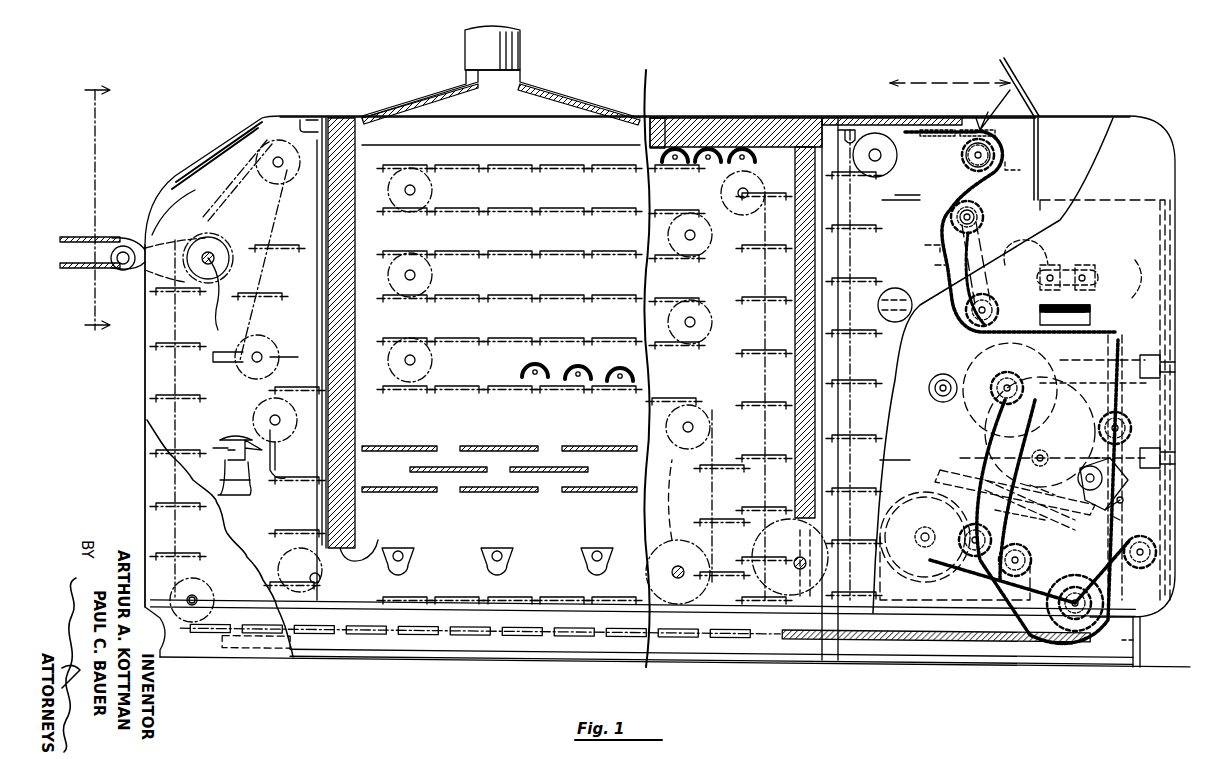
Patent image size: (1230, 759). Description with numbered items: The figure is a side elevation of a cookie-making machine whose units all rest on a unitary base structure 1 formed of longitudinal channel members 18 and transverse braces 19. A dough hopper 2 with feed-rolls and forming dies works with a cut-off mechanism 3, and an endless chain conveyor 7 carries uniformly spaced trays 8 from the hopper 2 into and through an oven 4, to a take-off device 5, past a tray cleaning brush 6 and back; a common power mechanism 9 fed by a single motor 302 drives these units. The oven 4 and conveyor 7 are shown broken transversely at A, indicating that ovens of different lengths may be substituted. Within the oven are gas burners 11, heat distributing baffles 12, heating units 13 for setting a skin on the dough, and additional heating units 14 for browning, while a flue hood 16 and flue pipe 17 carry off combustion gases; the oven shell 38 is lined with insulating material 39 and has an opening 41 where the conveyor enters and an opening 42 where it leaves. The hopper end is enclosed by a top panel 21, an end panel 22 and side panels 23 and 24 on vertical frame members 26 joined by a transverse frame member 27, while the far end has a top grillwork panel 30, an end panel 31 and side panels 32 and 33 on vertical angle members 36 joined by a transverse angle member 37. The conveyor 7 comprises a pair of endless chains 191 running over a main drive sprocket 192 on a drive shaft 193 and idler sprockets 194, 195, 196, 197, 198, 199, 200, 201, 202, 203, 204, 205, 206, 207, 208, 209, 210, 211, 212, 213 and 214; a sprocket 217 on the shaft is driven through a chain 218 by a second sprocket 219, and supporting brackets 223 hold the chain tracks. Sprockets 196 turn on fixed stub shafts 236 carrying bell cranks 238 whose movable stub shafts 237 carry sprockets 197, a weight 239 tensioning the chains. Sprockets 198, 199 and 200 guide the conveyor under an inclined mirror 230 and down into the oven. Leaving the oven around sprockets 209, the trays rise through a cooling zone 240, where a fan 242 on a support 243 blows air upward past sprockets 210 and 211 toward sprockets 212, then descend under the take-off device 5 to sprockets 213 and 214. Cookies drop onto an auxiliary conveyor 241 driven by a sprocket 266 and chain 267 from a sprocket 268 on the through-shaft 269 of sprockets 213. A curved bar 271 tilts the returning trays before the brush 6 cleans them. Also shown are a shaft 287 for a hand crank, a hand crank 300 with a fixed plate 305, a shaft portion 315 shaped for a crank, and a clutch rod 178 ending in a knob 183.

The base structure 1 is at (980, 672).
The dough hopper 2 is at (1056, 198).
The cut-off mechanism 3 is at (1045, 338).
The oven 4 is at (718, 117).
The take-off device 5 is at (178, 202).
The tray cleaning brush 6 is at (1162, 563).
The endless chain conveyor 7 is at (745, 655).
The trays 8 is at (760, 617).
The common power mechanism 9 is at (1070, 512).
The gas burners 11 is at (597, 548).
The heat distributing baffles 12 is at (410, 472).
The heating units 13 is at (710, 166).
The additional heating units 14 is at (602, 372).
The flue hood 16 is at (576, 100).
The flue pipe 17 is at (465, 47).
The channel members 18 is at (517, 660).
The transverse braces 19 is at (1165, 632).
The top panel 21 is at (915, 118).
The end panel 22 is at (1172, 548).
The side panel 23 is at (901, 190).
The side panel 24 is at (895, 452).
The vertical frame members 26 is at (855, 248).
The transverse frame member 27 is at (848, 128).
The top grillwork panel 30 is at (205, 162).
The end panel 31 is at (145, 460).
The side panel 32 is at (150, 512).
The side panel 33 is at (200, 420).
The vertical angle members 36 is at (317, 295).
The transverse angle member 37 is at (312, 118).
The oven shell 38 is at (666, 118).
The insulating material 39 is at (778, 118).
The opening 41 is at (790, 520).
The opening 42 is at (367, 534).
The rod 178 is at (950, 405).
The knob or handle 183 is at (932, 395).
The endless chains 191 is at (838, 640).
The main drive sprocket 192 is at (1046, 543).
The drive shaft 193 is at (1075, 603).
The idler sprockets 194 is at (1150, 440).
The idler sprockets 195 is at (1122, 330).
The idler sprockets 196 is at (960, 338).
The idler sprockets 197 is at (950, 218).
The idler sprockets 198 is at (962, 168).
The idler sprockets 199 is at (897, 165).
The idler sprockets 200 is at (765, 540).
The idler sprockets 201 is at (752, 188).
The idler sprockets 202 is at (435, 190).
The idler sprockets 203 is at (705, 250).
The idler sprockets 204 is at (435, 275).
The idler sprockets 205 is at (712, 322).
The idler sprockets 206 is at (435, 362).
The idler sprockets 207 is at (688, 449).
The idler sprockets 208 is at (674, 500).
The sprockets 209 is at (290, 575).
The idler sprockets 210 is at (272, 454).
The idler sprockets 211 is at (240, 378).
The idler sprockets 212 is at (275, 140).
The idler sprockets 213 is at (222, 237).
The idler sprockets 214 is at (195, 592).
The sprocket 217 is at (1008, 582).
The chain 218 is at (1090, 640).
The second sprocket 219 is at (955, 546).
The supporting brackets 223 is at (325, 650).
The inclined mirror 230 is at (1000, 80).
The fixed stub shafts 236 is at (962, 325).
The movable stub shafts 237 is at (985, 225).
The bell cranks 238 is at (950, 285).
The weight 239 is at (890, 320).
The cookie cooling zone 240 is at (233, 342).
The auxiliary conveyor 241 is at (78, 238).
The fan 242 is at (238, 455).
The support 243 is at (252, 495).
The sprocket 266 is at (125, 242).
The chain 267 is at (142, 290).
The sprocket 268 is at (240, 200).
The through-shaft 269 is at (214, 294).
The curved bar 271 is at (1138, 648).
The shaft 287 is at (1172, 365).
The hand crank 300 is at (1105, 478).
The motor 302 is at (1015, 432).
The fixed plate 305 is at (1126, 508).
The shaft portion 315 is at (1144, 453).
The transverse break A is at (640, 355).